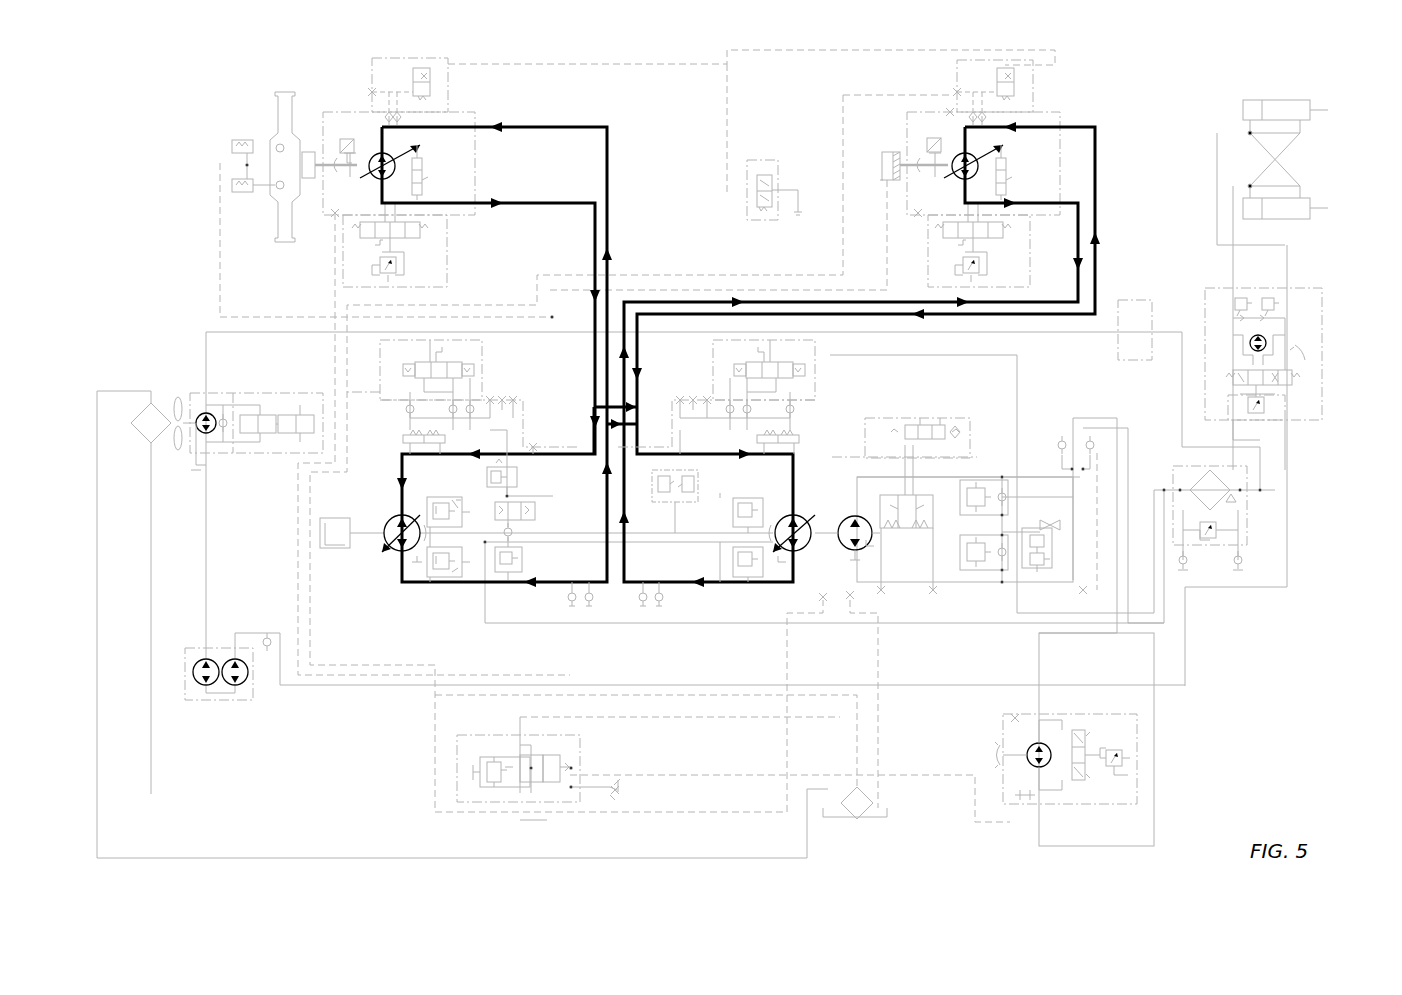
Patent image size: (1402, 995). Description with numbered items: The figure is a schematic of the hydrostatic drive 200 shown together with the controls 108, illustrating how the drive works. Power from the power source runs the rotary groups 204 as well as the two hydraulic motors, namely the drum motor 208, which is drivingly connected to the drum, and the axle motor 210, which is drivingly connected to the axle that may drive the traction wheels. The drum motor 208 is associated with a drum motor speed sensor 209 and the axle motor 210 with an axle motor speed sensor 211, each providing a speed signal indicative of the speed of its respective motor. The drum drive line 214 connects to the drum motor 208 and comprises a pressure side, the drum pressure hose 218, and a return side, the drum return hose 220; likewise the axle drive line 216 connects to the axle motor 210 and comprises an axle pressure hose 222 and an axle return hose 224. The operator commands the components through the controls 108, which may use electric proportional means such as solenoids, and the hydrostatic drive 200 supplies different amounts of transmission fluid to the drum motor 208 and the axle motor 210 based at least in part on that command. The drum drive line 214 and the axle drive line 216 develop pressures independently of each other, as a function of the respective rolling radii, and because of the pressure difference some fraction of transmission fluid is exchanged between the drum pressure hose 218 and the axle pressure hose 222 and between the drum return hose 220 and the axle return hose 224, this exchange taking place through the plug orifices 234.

The controls 108 is at (1035, 405).
The hydrostatic drive 200 is at (648, 128).
The rotary groups 204 is at (385, 545).
The drum motor 208 is at (378, 152).
The drum motor speed sensor 209 is at (345, 138).
The axle motor 210 is at (960, 152).
The axle motor speed sensor 211 is at (925, 142).
The drum drive line 214 is at (536, 354).
The axle drive line 216 is at (912, 338).
The drum pressure hose 218 is at (608, 197).
The drum return hose 220 is at (570, 197).
The axle pressure hose 222 is at (1097, 157).
The axle return hose 224 is at (1082, 206).
The plug orifices 234 is at (607, 405).